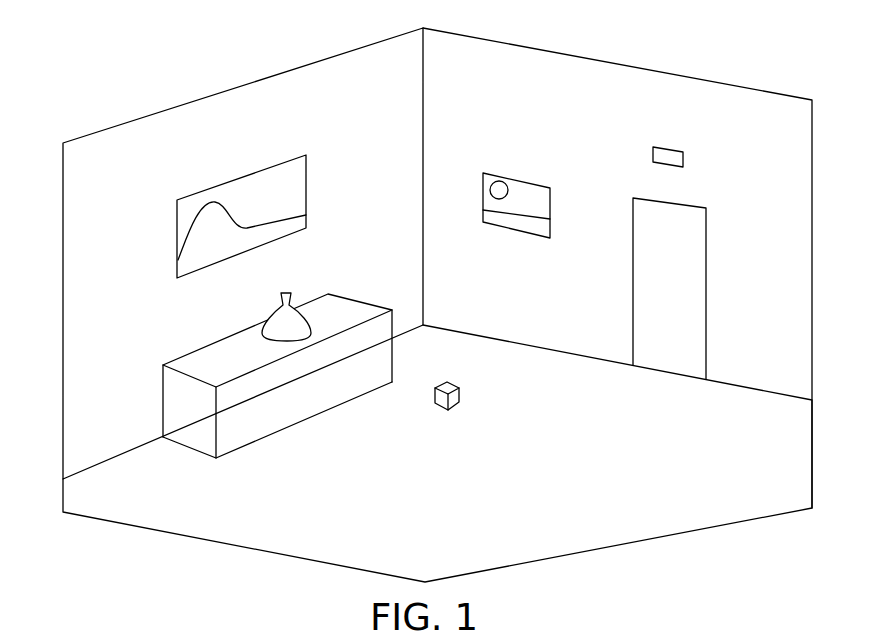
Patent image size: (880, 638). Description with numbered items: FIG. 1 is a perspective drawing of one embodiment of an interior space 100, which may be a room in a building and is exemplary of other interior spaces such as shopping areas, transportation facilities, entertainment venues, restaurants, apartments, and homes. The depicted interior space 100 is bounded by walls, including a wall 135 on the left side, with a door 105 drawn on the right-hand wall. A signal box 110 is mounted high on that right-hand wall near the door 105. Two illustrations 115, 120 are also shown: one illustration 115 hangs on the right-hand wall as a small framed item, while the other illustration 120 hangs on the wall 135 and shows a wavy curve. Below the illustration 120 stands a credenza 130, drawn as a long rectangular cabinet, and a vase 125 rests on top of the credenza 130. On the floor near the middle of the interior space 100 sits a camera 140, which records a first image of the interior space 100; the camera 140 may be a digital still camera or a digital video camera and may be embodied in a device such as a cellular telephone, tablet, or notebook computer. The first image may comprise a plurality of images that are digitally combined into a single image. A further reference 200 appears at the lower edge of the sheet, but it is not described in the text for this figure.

The interior space 100 is at (203, 59).
The door 105 is at (633, 285).
The signal box 110 is at (653, 160).
The illustration 115 is at (487, 170).
The illustration 120 is at (176, 200).
The vase 125 is at (279, 302).
The credenza 130 is at (162, 385).
The wall 135 is at (190, 127).
The camera 140 is at (445, 408).
The system (next figure) 200 is at (137, 637).